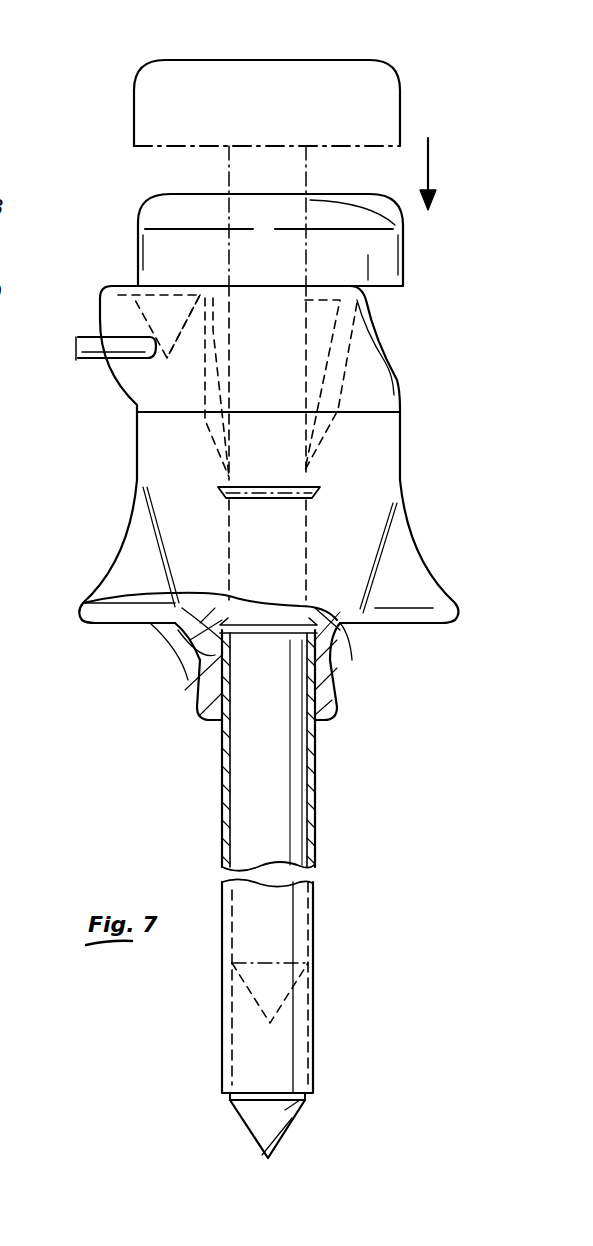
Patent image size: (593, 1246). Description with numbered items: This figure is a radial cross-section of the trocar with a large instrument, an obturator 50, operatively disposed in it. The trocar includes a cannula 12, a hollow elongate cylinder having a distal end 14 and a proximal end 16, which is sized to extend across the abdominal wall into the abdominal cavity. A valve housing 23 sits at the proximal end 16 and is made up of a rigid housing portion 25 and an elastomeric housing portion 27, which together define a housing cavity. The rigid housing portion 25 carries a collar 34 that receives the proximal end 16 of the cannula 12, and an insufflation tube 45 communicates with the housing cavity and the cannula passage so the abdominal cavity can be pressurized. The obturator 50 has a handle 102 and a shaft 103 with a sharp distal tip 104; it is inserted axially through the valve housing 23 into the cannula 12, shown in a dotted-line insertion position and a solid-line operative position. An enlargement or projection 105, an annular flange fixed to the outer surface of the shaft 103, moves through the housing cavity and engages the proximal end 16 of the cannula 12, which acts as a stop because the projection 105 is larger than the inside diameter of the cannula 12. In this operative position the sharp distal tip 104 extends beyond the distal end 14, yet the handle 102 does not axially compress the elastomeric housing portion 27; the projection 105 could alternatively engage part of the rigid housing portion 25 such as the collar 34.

The obturator 50 is at (353, 62).
The handle 102 is at (178, 60).
The elastomeric housing portion 27 is at (383, 328).
The insufflation tube 45 is at (82, 335).
The valve housing 23 is at (336, 440).
The rigid housing portion 25 is at (327, 510).
The projection 105 is at (230, 485).
The collar 34 is at (327, 677).
The proximal end 16 is at (217, 643).
The cannula 12 is at (315, 783).
The shaft 103 is at (260, 760).
The sharp distal tip 104 is at (284, 1002).
The distal end 14 is at (218, 1095).